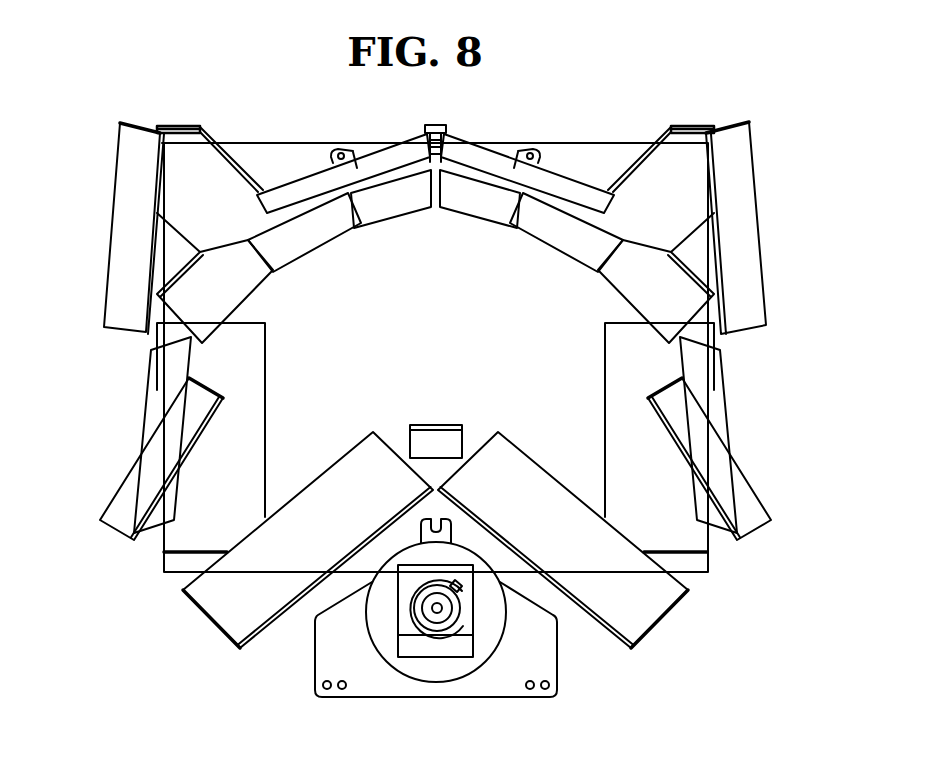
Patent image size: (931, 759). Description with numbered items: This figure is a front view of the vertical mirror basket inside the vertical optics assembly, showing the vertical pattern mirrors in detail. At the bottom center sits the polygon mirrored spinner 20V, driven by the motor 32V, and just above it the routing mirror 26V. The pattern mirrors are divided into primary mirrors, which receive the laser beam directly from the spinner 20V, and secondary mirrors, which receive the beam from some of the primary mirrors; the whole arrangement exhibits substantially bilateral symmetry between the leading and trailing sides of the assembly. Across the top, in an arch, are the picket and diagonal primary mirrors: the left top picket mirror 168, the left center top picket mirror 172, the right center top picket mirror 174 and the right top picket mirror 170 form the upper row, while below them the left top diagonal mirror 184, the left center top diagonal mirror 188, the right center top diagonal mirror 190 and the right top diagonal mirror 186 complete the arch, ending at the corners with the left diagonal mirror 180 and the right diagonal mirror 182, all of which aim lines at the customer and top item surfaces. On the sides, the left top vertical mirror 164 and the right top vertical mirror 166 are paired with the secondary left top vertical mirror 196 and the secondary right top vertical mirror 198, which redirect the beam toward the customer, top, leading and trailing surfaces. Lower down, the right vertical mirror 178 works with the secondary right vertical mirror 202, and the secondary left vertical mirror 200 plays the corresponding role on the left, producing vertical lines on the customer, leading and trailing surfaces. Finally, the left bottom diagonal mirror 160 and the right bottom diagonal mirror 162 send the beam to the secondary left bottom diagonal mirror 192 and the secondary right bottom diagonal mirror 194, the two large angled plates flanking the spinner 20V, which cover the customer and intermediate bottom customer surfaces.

The secondary left top vertical mirror 196 is at (178, 135).
The secondary right top vertical mirror 198 is at (684, 136).
The left top vertical mirror 164 is at (120, 237).
The right top vertical mirror 166 is at (742, 232).
The left top picket mirror 168 is at (320, 187).
The right top picket mirror 170 is at (558, 180).
The left center top picket mirror 172 is at (420, 147).
The right center top picket mirror 174 is at (473, 150).
The left center top diagonal mirror 188 is at (388, 205).
The right center top diagonal mirror 190 is at (471, 205).
The left top diagonal mirror 184 is at (297, 243).
The right top diagonal mirror 186 is at (563, 235).
The left diagonal mirror 180 is at (243, 288).
The right diagonal mirror 182 is at (623, 286).
The routing mirror 26V is at (435, 425).
The secondary left vertical mirror 200 is at (252, 433).
The secondary right vertical mirror 202 is at (620, 433).
The right vertical mirror 178 is at (717, 405).
The left bottom diagonal mirror 160 is at (127, 506).
The right bottom diagonal mirror 162 is at (750, 506).
The secondary left bottom diagonal mirror 192 is at (228, 614).
The secondary right bottom diagonal mirror 194 is at (655, 604).
The motor 32V is at (412, 676).
The polygon mirrored spinner 20V is at (456, 654).